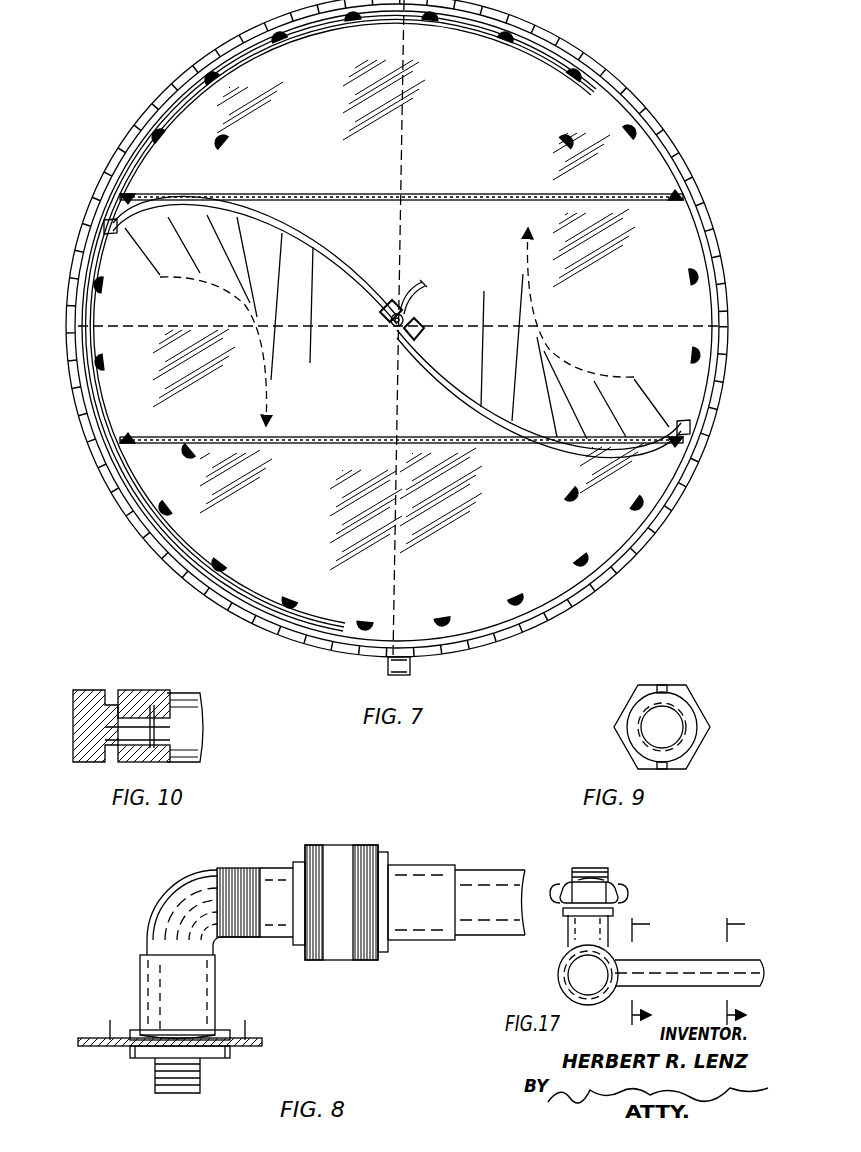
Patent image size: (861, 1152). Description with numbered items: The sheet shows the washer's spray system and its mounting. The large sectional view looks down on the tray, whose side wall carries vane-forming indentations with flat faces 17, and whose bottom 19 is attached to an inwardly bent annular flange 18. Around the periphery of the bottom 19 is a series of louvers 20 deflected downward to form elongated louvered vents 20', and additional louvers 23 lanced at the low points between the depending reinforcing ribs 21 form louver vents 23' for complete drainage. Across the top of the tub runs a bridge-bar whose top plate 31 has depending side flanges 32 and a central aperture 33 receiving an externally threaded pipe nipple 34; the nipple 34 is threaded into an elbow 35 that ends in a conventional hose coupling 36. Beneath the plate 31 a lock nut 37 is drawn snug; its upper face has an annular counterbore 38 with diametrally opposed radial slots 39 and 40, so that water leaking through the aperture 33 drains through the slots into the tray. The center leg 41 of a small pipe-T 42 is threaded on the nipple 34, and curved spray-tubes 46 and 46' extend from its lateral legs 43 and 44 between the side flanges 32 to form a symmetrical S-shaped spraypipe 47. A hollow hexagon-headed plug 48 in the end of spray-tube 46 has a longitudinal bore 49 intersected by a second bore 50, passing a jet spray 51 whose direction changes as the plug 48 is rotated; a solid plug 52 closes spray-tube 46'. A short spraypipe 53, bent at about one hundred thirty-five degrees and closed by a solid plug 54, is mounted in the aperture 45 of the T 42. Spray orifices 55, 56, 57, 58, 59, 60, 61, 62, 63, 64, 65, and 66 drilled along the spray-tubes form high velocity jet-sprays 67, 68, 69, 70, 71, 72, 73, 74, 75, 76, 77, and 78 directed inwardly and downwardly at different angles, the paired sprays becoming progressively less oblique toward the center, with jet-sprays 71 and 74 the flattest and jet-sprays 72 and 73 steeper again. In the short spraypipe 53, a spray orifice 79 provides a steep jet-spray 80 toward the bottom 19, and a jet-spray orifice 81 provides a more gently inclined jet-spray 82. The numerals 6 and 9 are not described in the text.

In FIG. 7, the tire 6 is at (660, 152).
In FIG. 8, the section line 9 is at (177, 1021).
In FIG. 7, the flat faces 17 is at (323, 390).
In FIG. 17, the inwardly bent annular flange 18 is at (660, 971).
In FIG. 17, the bottom 19 is at (755, 970).
In FIG. 7, the louvers 20 is at (397, 321).
In FIG. 7, the louvered vents 20' is at (424, 319).
In FIG. 7, the reinforcing ribs 21 is at (405, 176).
In FIG. 7, the additional louvers 23 is at (375, 318).
In FIG. 7, the louver vents 23' is at (372, 310).
In FIG. 8, the top plate 31 is at (95, 1042).
In FIG. 7, the side flanges 32 is at (440, 195).
In FIG. 8, the aperture 33 is at (215, 1034).
In FIG. 8, the pipe nipple 34 is at (165, 1092).
In FIG. 17, the pipe nipple 34 is at (608, 872).
In FIG. 8, the elbow 35 is at (192, 878).
In FIG. 8, the hose coupling 36 is at (325, 850).
In FIG. 9, the lock nut 37 is at (710, 727).
In FIG. 8, the lock nut 37 is at (230, 1052).
In FIG. 17, the lock nut 37 is at (628, 893).
In FIG. 9, the annular counterbore 38 is at (692, 718).
In FIG. 9, the radial slot 39 is at (660, 688).
In FIG. 9, the radial slot 40 is at (665, 768).
In FIG. 8, the radial slot 40 is at (175, 1050).
In FIG. 17, the radial slot 40 is at (575, 884).
In FIG. 7, the center leg 41 is at (392, 326).
In FIG. 17, the center leg 41 is at (568, 940).
In FIG. 7, the pipe-T 42 is at (407, 330).
In FIG. 17, the pipe-T 42 is at (558, 975).
In FIG. 7, the lateral leg 43 is at (400, 303).
In FIG. 7, the lateral leg 44 is at (420, 328).
In FIG. 7, the aperture 45 is at (408, 312).
In FIG. 7, the spray-tube 46 is at (320, 219).
In FIG. 10, the spray-tube 46 is at (194, 711).
In FIG. 7, the spray-tube 46' is at (447, 406).
In FIG. 17, the spray-tube 46' is at (567, 977).
In FIG. 7, the S-shaped spraypipe 47 is at (442, 355).
In FIG. 7, the hexagon-headed plug 48 is at (106, 227).
In FIG. 10, the hexagon-headed plug 48 is at (80, 690).
In FIG. 10, the longitudinal bore 49 is at (148, 705).
In FIG. 10, the second bore 50 is at (88, 752).
In FIG. 7, the jet spray 51 is at (88, 327).
In FIG. 7, the solid plug 52 is at (687, 413).
In FIG. 7, the short spraypipe 53 is at (415, 300).
In FIG. 17, the short spraypipe 53 is at (695, 960).
In FIG. 7, the solid plug 54 is at (420, 283).
In FIG. 17, the solid plug 54 is at (762, 966).
In FIG. 7, the spray orifice 55 is at (142, 248).
In FIG. 7, the spray orifice 56 is at (184, 243).
In FIG. 7, the spray orifice 57 is at (228, 257).
In FIG. 7, the spray orifice 58 is at (249, 267).
In FIG. 7, the spray orifice 59 is at (287, 306).
In FIG. 7, the spray orifice 60 is at (323, 305).
In FIG. 7, the spray orifice 61 is at (489, 390).
In FIG. 7, the spray orifice 62 is at (521, 407).
In FIG. 7, the spray orifice 63 is at (569, 418).
In FIG. 7, the spray orifice 64 is at (601, 423).
In FIG. 7, the spray orifice 65 is at (634, 420).
In FIG. 7, the spray orifice 66 is at (673, 407).
In FIG. 7, the jet-spray 67 is at (139, 272).
In FIG. 7, the jet-spray 68 is at (184, 268).
In FIG. 7, the jet-spray 69 is at (223, 275).
In FIG. 7, the jet-spray 70 is at (259, 282).
In FIG. 7, the jet-spray 71 is at (226, 351).
In FIG. 7, the jet-spray 72 is at (306, 372).
In FIG. 7, the jet-spray 73 is at (557, 318).
In FIG. 7, the jet-spray 74 is at (513, 347).
In FIG. 7, the jet-spray 75 is at (542, 387).
In FIG. 7, the jet-spray 76 is at (565, 395).
In FIG. 7, the jet-spray 77 is at (610, 403).
In FIG. 7, the jet-spray 78 is at (651, 392).
In FIG. 7, the spray orifice 79 is at (402, 303).
In FIG. 17, the spray orifice 79 is at (630, 985).
In FIG. 7, the jet-spray 80 is at (385, 307).
In FIG. 17, the jet-spray 80 is at (632, 987).
In FIG. 7, the jet-spray orifice 81 is at (410, 303).
In FIG. 17, the jet-spray orifice 81 is at (725, 985).
In FIG. 7, the jet-spray 82 is at (417, 285).
In FIG. 17, the jet-spray 82 is at (720, 986).